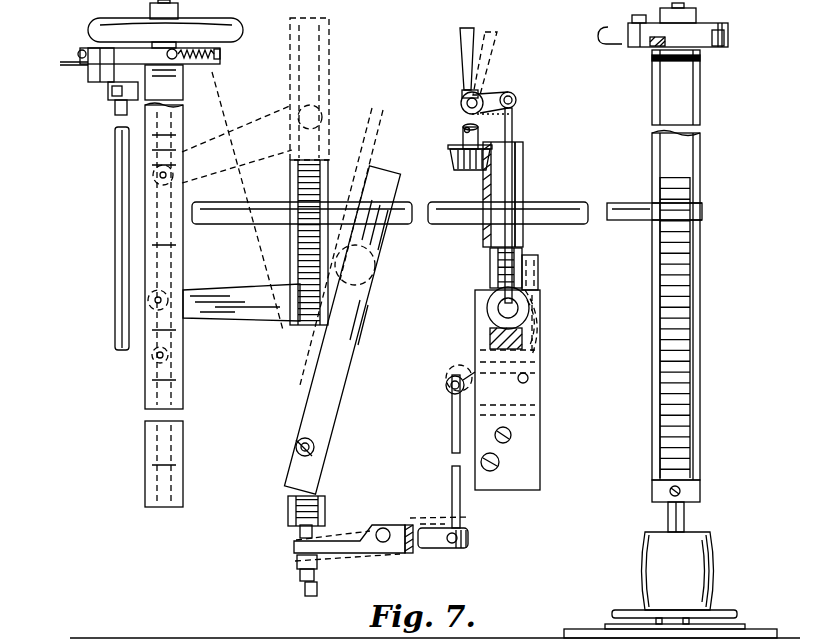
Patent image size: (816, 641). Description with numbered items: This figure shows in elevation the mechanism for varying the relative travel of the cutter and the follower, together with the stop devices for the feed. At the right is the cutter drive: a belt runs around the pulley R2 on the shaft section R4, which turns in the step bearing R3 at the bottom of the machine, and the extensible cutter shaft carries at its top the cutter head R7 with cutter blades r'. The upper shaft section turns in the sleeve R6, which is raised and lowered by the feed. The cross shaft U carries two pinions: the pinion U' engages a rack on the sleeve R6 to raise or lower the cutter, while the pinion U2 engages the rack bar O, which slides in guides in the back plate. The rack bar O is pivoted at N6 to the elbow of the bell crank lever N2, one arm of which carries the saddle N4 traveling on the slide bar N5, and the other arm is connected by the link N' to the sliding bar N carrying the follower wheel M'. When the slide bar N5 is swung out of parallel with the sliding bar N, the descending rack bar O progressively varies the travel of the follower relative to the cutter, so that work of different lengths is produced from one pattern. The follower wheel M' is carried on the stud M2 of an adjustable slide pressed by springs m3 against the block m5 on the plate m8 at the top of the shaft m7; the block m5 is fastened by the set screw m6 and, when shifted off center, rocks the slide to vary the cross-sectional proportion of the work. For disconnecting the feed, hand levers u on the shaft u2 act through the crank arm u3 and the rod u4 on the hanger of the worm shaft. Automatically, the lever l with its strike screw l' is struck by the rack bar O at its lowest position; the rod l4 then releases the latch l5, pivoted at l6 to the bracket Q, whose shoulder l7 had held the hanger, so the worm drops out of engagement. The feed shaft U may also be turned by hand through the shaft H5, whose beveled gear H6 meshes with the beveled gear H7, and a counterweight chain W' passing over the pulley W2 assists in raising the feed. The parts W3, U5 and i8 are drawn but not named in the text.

The stud M2 is at (178, 10).
The follower wheel M' is at (179, 21).
The adjustable block m5 is at (200, 60).
The springs m3 is at (187, 65).
The set screw m6 is at (110, 88).
The plate m8 is at (112, 97).
The shaft m7 is at (117, 172).
The sliding bar N is at (129, 305).
The link N' is at (124, 269).
The bell crank lever N2 is at (254, 316).
The pinion U2 is at (290, 233).
The slide bar N5 is at (342, 366).
The pivotal connection N6 is at (358, 312).
The saddle N4 is at (337, 419).
The rack bar O is at (325, 506).
The strike screw l' is at (320, 543).
The lever l is at (382, 556).
The rod l4 is at (465, 505).
The latch l5 is at (472, 384).
The hand levers u is at (455, 53).
The shaft u2 is at (461, 103).
The crank arm u3 is at (497, 92).
The rod u4 is at (514, 114).
The shaft H5 is at (464, 133).
The beveled gear H6 is at (452, 158).
The beveled gear H7 is at (481, 187).
The guide W3 is at (524, 186).
The pulley W2 is at (540, 258).
The bracket U5 is at (540, 280).
The chain W' is at (477, 308).
The bracket Q is at (544, 414).
The link i8 is at (536, 318).
The shoulder l7 is at (540, 346).
The pivot l6 is at (530, 384).
The cutter head R7 is at (727, 42).
The cutter blades r' is at (604, 47).
The sleeve R6 is at (701, 451).
The shaft section R4 is at (687, 510).
The pulley R2 is at (689, 558).
The step bearing R3 is at (727, 625).
The cross shaft U is at (653, 199).
The pinion U' is at (694, 209).